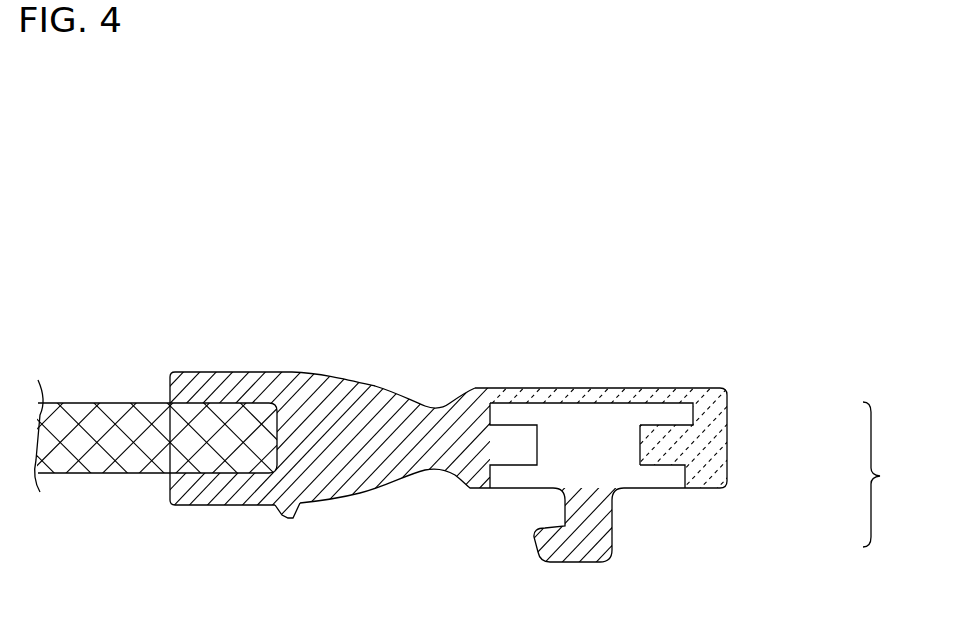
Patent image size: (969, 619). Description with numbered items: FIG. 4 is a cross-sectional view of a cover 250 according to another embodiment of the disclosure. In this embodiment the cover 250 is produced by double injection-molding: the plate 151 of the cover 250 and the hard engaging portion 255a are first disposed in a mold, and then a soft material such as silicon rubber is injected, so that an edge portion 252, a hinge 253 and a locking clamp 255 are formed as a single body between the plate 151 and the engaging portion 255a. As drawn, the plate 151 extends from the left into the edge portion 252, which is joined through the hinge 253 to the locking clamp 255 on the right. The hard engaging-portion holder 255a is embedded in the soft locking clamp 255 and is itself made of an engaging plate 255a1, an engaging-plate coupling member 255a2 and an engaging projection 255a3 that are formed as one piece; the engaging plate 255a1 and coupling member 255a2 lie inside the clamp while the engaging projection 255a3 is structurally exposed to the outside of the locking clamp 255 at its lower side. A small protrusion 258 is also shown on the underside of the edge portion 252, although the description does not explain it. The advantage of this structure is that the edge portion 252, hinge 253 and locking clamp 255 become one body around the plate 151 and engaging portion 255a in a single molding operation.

The cover 250 is at (122, 164).
The plate 151 is at (105, 401).
The edge portion 252 is at (223, 372).
The hinge 253 is at (432, 406).
The locking clamp 255 is at (567, 387).
The engaging-portion holder 255a is at (899, 474).
The engaging plate 255a1 is at (696, 413).
The engaging-plate coupling member 255a2 is at (643, 442).
The engaging projection 255a3 is at (534, 534).
The protrusion 258 is at (292, 518).